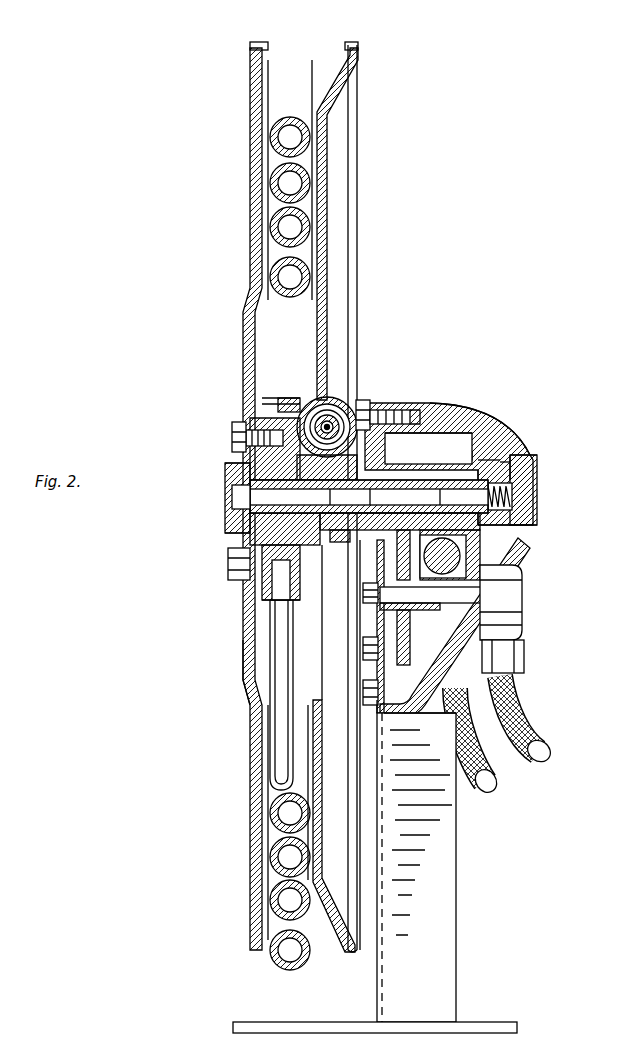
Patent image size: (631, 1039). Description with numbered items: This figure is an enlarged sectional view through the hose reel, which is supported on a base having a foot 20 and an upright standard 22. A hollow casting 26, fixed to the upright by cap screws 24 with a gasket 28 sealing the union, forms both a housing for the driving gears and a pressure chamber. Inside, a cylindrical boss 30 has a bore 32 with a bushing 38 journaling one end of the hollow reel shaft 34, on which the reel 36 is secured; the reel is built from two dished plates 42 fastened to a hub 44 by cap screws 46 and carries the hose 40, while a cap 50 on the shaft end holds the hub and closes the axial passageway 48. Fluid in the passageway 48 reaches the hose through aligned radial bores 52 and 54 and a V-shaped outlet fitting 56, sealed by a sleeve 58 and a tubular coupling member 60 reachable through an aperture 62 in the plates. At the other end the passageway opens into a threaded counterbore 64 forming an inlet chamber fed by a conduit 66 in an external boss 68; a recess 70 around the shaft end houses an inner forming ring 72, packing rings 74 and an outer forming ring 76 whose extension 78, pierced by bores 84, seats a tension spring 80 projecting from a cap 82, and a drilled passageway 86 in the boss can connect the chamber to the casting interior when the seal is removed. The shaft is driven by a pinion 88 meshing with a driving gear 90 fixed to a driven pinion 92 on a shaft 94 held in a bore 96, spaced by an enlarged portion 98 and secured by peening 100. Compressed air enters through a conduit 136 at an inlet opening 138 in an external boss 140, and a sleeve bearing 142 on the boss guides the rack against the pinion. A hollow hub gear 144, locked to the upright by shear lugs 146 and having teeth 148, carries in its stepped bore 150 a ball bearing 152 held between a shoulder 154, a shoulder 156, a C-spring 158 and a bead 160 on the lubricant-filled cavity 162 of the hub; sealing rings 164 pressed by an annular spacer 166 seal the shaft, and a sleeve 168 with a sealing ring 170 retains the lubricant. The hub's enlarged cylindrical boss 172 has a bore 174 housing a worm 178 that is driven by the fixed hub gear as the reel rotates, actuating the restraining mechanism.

The foot 20 is at (470, 1022).
The upright standard 22 is at (440, 915).
The cap screws 24 is at (378, 690).
The hollow casting 26 is at (522, 558).
The gasket 28 is at (355, 740).
The cylindrical boss 30 is at (478, 448).
The bore 32 is at (472, 440).
The reel shaft 34 is at (412, 468).
The reel 36 is at (238, 322).
The bushing 38 is at (452, 430).
The hose 40 is at (283, 968).
The circular sheet metal plates 42 is at (347, 60).
The hub 44 is at (292, 398).
The cap screws 46 is at (230, 422).
The axial passageway 48 is at (369, 496).
The cap 50 is at (225, 498).
The radial bore 52 is at (232, 512).
The radial bore 54 is at (245, 535).
The V-shaped outlet fitting 56 is at (278, 740).
The sleeve 58 is at (272, 600).
The tubular coupling member 60 is at (262, 580).
The aperture 62 is at (262, 634).
The threaded counterbore 64 is at (518, 472).
The conduit 66 is at (524, 700).
The external boss 68 is at (522, 588).
The intermediate recess 70 is at (407, 546).
The inner forming ring 72 is at (486, 455).
The packing rings 74 is at (500, 458).
The outer forming ring 76 is at (514, 464).
The extension 78 is at (535, 470).
The tension spring 80 is at (537, 480).
The cap 82 is at (537, 500).
The vertical and axial bores 84 is at (537, 520).
The drilled passageway 86 is at (460, 557).
The pinion 88 is at (432, 462).
The driving gear 90 is at (418, 720).
The driven pinion 92 is at (424, 618).
The shaft 94 is at (522, 620).
The bore 96 is at (500, 598).
The enlarged portion 98 is at (368, 652).
The peening 100 is at (368, 626).
The conduit 136 is at (486, 795).
The inlet opening 138 is at (525, 655).
The external boss 140 is at (442, 718).
The sleeve bearing 142 is at (456, 466).
The hollow hub gear 144 is at (378, 592).
The shear lugs 146 is at (432, 432).
The teeth 148 is at (246, 660).
The stepped bore 150 is at (369, 494).
The ball bearing 152 is at (248, 458).
The shoulder 154 is at (344, 498).
The shoulder 156 is at (340, 545).
The C-spring 158 is at (337, 412).
The bead 160 is at (230, 565).
The cavity 162 is at (230, 437).
The sealing rings 164 is at (410, 412).
The annular spacer 166 is at (424, 495).
The sleeve 168 is at (382, 408).
The sealing ring 170 is at (366, 398).
The cylindrical boss 172 is at (322, 398).
The bore 174 is at (312, 385).
The worm 178 is at (312, 418).